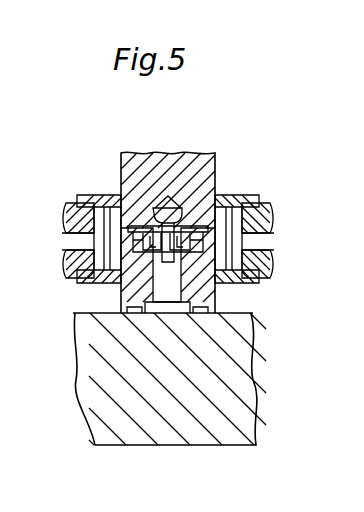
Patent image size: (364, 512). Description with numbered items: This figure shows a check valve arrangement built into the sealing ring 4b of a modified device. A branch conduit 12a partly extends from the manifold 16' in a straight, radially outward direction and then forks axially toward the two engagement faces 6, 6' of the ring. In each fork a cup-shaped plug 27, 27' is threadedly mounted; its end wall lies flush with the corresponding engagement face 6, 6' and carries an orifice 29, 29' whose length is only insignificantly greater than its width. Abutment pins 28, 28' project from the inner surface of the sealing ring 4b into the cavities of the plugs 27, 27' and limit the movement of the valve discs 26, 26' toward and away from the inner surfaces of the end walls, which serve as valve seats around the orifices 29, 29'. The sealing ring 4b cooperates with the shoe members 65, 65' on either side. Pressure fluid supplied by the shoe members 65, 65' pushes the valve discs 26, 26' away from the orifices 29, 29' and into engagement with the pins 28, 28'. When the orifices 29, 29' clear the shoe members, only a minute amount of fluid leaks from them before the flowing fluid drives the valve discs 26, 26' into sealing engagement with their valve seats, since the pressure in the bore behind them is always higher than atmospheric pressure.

The sealing ring 4b is at (168, 162).
The engagement face 6 is at (95, 198).
The engagement face 6' is at (246, 202).
The shoe member 65 is at (89, 219).
The shoe member 65' is at (246, 221).
The valve disc 26 is at (60, 218).
The valve disc 26' is at (284, 218).
The cup-shaped plug 27 is at (57, 265).
The cup-shaped plug 27' is at (284, 265).
The abutment pin 28 is at (160, 187).
The abutment pin 28' is at (181, 176).
The orifice 29 is at (57, 242).
The orifice 29' is at (284, 242).
The branch conduit 12a is at (160, 278).
The manifold 16' is at (226, 303).